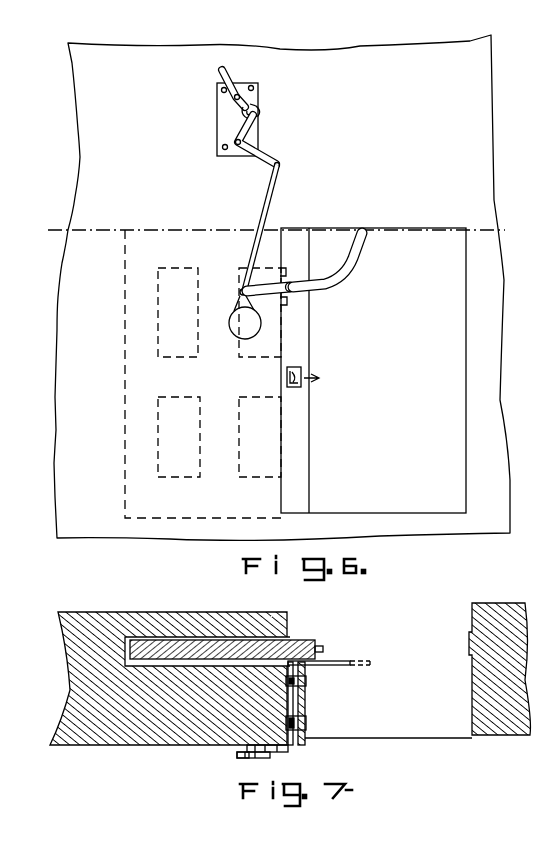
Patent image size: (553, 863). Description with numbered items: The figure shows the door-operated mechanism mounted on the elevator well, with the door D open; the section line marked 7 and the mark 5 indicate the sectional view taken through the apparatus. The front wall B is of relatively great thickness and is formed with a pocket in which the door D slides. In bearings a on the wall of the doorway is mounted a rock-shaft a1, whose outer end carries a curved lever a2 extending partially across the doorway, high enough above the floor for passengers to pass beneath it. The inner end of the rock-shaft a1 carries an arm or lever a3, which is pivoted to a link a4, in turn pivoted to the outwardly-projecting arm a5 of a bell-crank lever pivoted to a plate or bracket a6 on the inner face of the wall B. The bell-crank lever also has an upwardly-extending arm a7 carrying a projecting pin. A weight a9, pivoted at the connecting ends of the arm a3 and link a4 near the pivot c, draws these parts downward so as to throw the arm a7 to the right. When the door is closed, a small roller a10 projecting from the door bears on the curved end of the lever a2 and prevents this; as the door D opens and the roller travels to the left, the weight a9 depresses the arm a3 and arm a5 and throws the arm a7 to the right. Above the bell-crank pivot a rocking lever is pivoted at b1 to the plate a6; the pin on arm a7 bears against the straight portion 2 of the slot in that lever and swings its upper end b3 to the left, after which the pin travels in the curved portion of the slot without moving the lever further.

In FIG. 7, the front wall B is at (530, 622).
In FIG. 6, the door D is at (302, 331).
In FIG. 7, the door D is at (172, 668).
In FIG. 6, the straight portion of slot 2 is at (237, 119).
In FIG. 6, the section line 7- 7 is at (277, 241).
In FIG. 6, the section line mark 5 is at (542, 235).
In FIG. 6, the pivot c is at (228, 279).
In FIG. 7, the bearings a is at (304, 681).
In FIG. 6, the rock-shaft a1 is at (291, 284).
In FIG. 6, the curved lever a2 is at (340, 278).
In FIG. 7, the curved lever a2 is at (350, 666).
In FIG. 7, the arm or lever a3 is at (283, 753).
In FIG. 6, the link a4 is at (267, 212).
In FIG. 7, the link a4 is at (315, 703).
In FIG. 6, the outwardly-projecting arm of bell-crank lever a5 is at (263, 171).
In FIG. 6, the plate or bracket a6 is at (217, 117).
In FIG. 6, the upwardly-extending arm of bell-crank lever a7 is at (248, 128).
In FIG. 6, the weight a9 is at (232, 317).
In FIG. 7, the weight a9 is at (240, 758).
In FIG. 7, the roller a10 is at (222, 662).
In FIG. 6, the pivot of rocking lever b1 is at (256, 93).
In FIG. 6, the upper end of rocking lever b3 is at (229, 72).